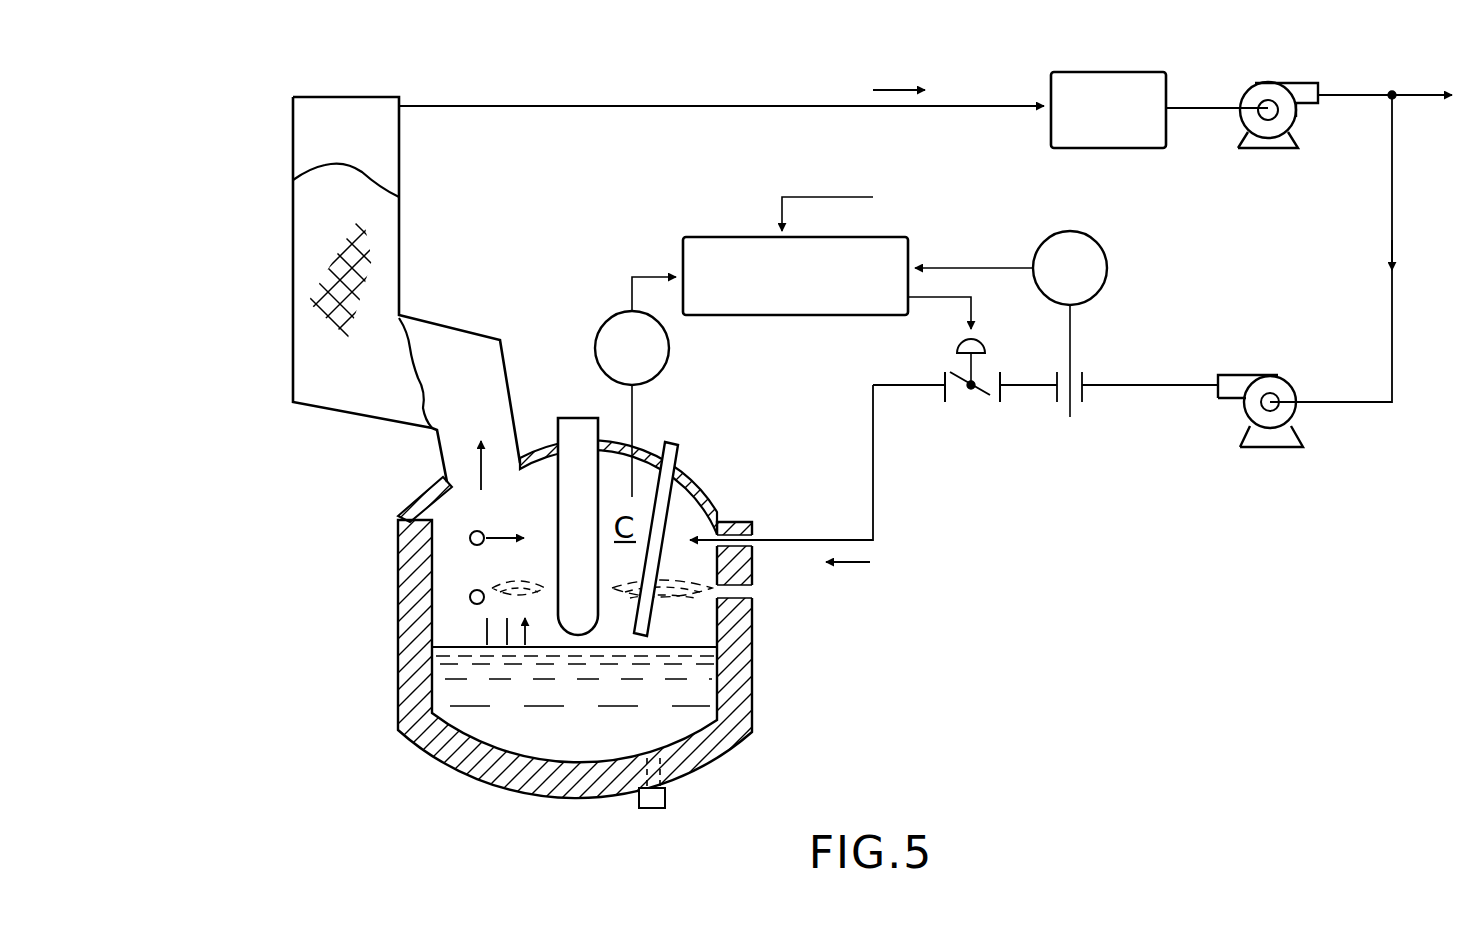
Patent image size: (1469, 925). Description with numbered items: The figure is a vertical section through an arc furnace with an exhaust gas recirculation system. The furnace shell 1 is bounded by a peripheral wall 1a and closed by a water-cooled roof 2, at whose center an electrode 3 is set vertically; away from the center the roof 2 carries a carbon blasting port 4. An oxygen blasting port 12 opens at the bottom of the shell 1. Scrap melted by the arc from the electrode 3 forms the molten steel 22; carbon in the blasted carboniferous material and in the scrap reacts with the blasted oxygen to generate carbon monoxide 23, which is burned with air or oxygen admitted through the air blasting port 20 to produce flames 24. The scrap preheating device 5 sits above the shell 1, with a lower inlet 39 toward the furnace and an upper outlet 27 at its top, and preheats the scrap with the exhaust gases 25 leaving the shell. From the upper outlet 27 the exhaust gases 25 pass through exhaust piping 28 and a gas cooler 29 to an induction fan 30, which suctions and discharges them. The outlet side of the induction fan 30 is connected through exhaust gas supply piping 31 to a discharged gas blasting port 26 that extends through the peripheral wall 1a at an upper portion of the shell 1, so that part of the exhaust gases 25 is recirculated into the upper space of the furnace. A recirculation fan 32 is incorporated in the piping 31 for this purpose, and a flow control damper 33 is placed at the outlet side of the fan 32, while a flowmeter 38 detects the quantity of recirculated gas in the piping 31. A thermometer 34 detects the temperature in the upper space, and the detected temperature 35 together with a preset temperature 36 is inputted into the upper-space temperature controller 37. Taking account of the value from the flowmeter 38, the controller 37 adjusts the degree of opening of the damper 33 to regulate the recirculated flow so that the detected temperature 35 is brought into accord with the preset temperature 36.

The furnace shell 1 is at (582, 633).
The peripheral wall 1a is at (405, 582).
The water-cooled roof 2 is at (704, 481).
The electrode 3 is at (574, 420).
The carbon blasting port 4 is at (672, 443).
The scrap preheating device 5 is at (276, 296).
The oxygen blasting port 12 is at (668, 796).
The air blasting port 20 is at (740, 594).
The molten steel 22 is at (467, 698).
The carbon monoxide 23 is at (483, 636).
The flames 24 is at (500, 582).
The exhaust gases 25 is at (483, 467).
The discharged gas blasting port 26 is at (755, 522).
The upper outlet 27 is at (302, 119).
The exhaust piping 28 is at (630, 106).
The gas cooler 29 is at (1105, 72).
The induction fan 30 is at (1268, 83).
The exhaust gas supply piping 31 is at (1150, 388).
The recirculation fan 32 is at (1250, 376).
The flow control damper 33 is at (971, 402).
The thermometer 34 is at (604, 330).
The detected temperature 35 is at (652, 277).
The preset temperature 36 is at (822, 197).
The upper-space temperature controller 37 is at (778, 316).
The flowmeter 38 is at (1107, 270).
The lower inlet 39 is at (452, 404).